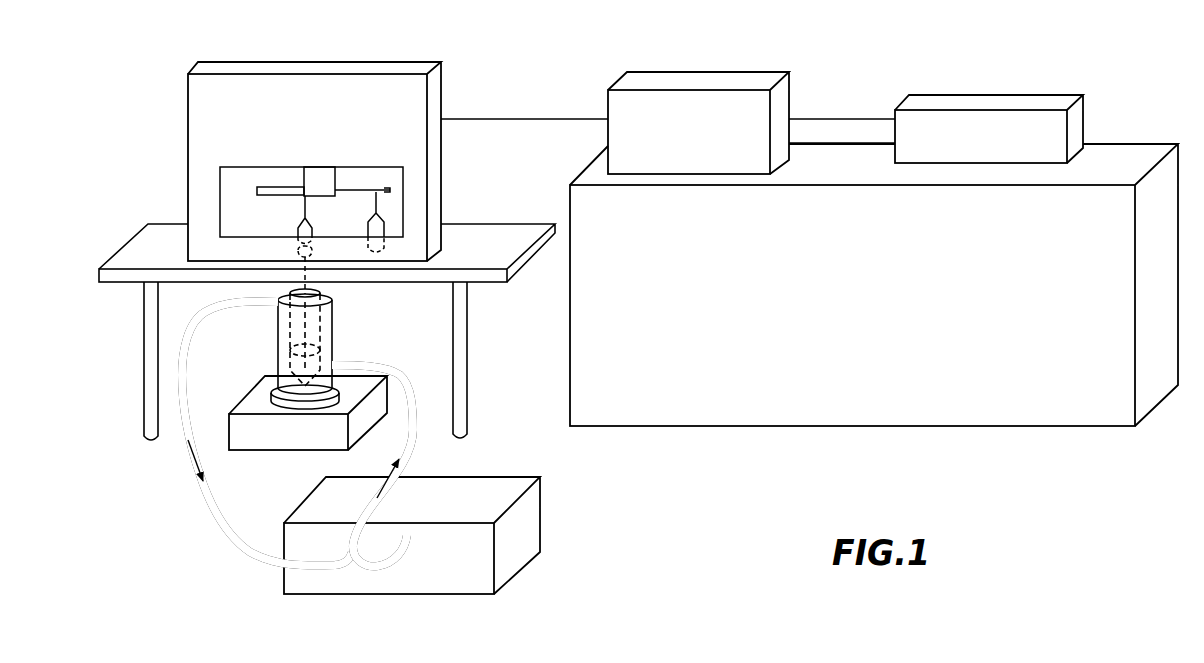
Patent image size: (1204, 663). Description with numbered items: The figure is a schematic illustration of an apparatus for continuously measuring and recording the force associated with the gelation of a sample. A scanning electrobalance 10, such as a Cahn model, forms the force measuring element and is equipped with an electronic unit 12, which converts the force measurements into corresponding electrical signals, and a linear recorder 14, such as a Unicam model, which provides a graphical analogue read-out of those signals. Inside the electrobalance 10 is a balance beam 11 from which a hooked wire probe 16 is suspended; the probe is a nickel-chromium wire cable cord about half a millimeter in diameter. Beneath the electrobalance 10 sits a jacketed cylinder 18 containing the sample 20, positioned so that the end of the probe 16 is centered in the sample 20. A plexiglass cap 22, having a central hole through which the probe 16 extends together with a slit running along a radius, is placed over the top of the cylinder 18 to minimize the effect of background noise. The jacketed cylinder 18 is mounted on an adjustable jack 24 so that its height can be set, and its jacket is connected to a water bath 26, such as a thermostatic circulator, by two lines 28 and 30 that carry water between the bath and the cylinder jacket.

The scanning electrobalance 10 is at (392, 67).
The balance beam 11 is at (262, 180).
The electronic unit 12 is at (743, 83).
The linear recorder 14 is at (1057, 100).
The hooked wire probe 16 is at (274, 349).
The jacketed cylinder 18 is at (278, 339).
The sample 20 is at (277, 361).
The plexiglass cap 22 is at (280, 299).
The adjustable jack 24 is at (277, 449).
The water bath 26 is at (527, 525).
The line 28 is at (407, 432).
The line 30 is at (238, 537).